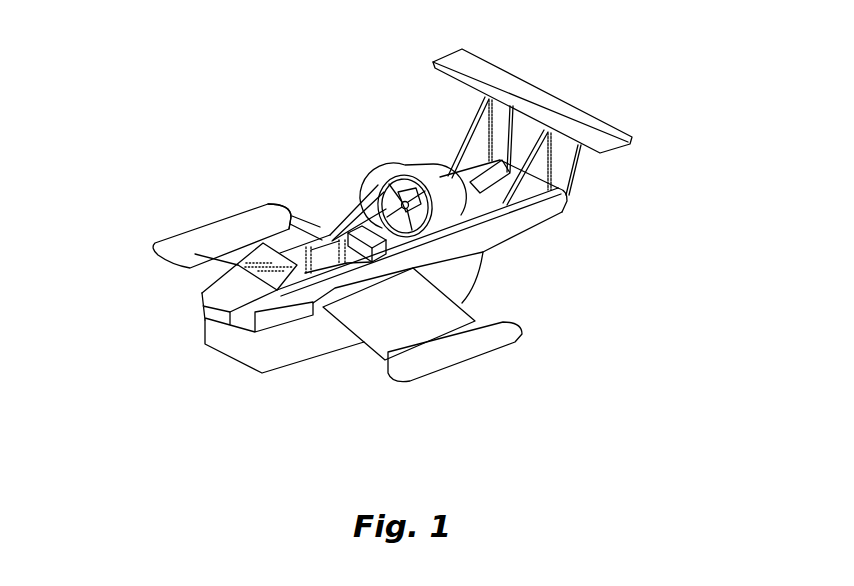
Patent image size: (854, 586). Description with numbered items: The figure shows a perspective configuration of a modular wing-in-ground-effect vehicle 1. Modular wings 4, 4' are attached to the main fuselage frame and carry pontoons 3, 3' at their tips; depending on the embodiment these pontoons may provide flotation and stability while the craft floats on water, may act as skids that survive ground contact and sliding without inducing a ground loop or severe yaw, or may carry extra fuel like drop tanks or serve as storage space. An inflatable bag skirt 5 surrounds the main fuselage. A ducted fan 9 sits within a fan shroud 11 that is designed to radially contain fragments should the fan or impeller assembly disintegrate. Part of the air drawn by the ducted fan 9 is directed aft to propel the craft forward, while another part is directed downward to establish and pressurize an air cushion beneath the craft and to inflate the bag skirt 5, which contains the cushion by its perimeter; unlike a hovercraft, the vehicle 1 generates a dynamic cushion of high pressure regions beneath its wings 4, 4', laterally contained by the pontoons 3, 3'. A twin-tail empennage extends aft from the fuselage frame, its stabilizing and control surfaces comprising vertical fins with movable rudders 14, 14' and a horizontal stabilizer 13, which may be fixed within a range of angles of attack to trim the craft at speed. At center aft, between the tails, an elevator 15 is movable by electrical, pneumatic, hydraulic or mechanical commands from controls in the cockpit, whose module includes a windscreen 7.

The wing-in-ground-effect vehicle 1 is at (248, 453).
The pontoon 3 is at (183, 223).
The pontoon 3' is at (462, 382).
The modular wing 4 is at (276, 166).
The modular wing 4' is at (458, 306).
The inflatable bag skirt 5 is at (278, 373).
The windscreen 7 is at (263, 244).
The ducted fan 9 is at (378, 183).
The fan shroud 11 is at (410, 170).
The horizontal stabilizer 13 is at (590, 120).
The vertical fin with movable rudder 14 is at (497, 108).
The vertical fin with movable rudder 14' is at (586, 204).
The elevator 15 is at (504, 173).